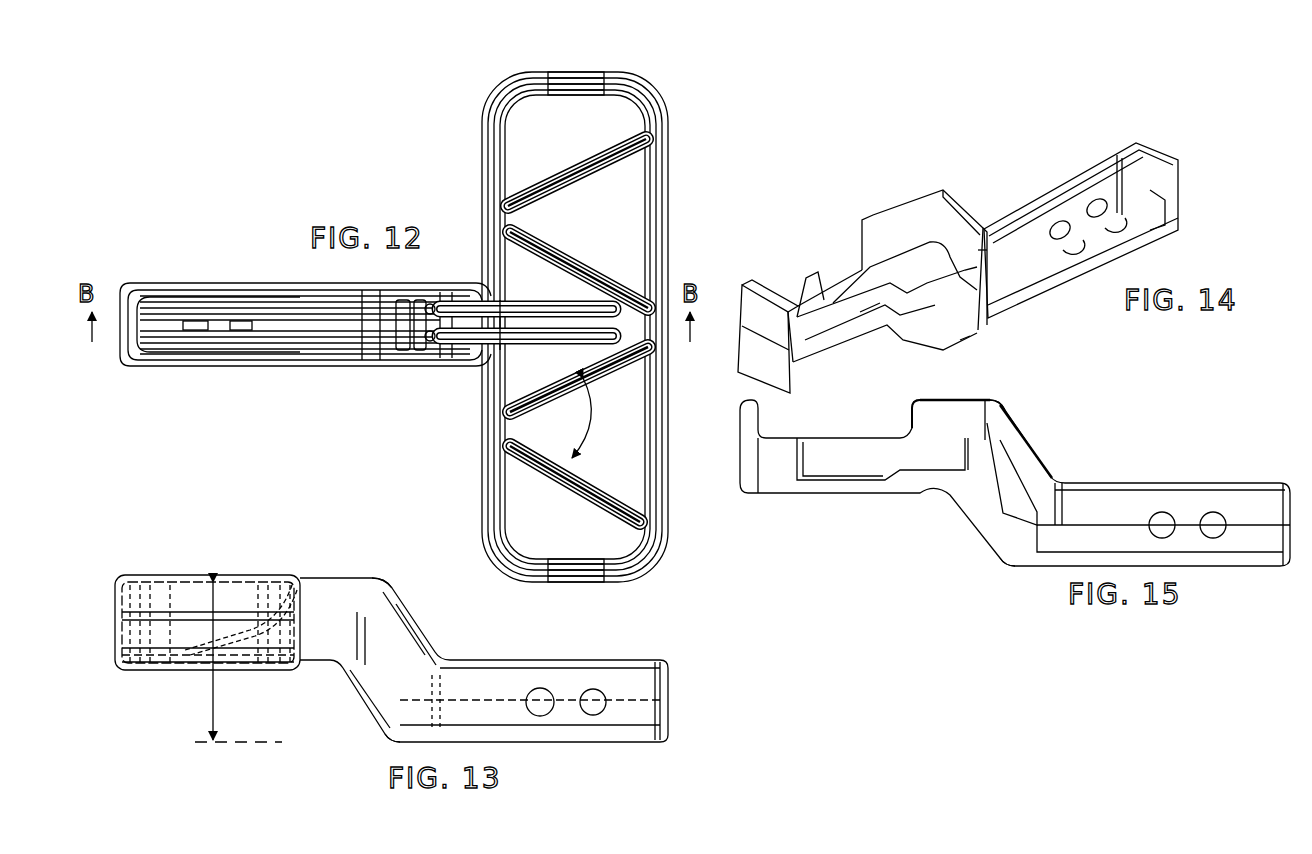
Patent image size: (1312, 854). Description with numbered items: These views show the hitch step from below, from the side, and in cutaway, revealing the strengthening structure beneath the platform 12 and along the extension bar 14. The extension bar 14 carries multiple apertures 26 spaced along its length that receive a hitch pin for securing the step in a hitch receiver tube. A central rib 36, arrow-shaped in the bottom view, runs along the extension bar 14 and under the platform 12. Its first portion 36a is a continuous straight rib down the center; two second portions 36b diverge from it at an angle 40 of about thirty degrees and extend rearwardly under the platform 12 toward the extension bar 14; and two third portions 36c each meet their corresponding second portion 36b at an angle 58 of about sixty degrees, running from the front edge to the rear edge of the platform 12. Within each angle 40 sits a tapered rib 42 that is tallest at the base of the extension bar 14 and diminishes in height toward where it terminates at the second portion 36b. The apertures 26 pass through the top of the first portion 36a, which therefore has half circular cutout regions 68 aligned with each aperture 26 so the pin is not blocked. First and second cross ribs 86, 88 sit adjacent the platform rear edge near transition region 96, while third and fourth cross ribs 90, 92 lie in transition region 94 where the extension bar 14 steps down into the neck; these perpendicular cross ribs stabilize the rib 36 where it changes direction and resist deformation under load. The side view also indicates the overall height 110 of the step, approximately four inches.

In FIG. 12, the platform 12 is at (622, 98).
In FIG. 14, the platform 12 is at (750, 344).
In FIG. 15, the platform 12 is at (760, 483).
In FIG. 12, the extension bar 14 is at (280, 352).
In FIG. 13, the apertures 26 is at (590, 697).
In FIG. 14, the apertures 26 is at (1062, 226).
In FIG. 15, the apertures 26 is at (1165, 512).
In FIG. 12, the rib 36 is at (282, 320).
In FIG. 14, the rib 36 is at (860, 312).
In FIG. 15, the rib 36 is at (1083, 537).
In FIG. 12, the first portion of rib 36a is at (563, 260).
In FIG. 12, the second portions of rib 36b is at (603, 260).
In FIG. 12, the third portions of rib 36c is at (624, 134).
In FIG. 12, the angle 40 is at (522, 246).
In FIG. 12, the rib 42 is at (530, 368).
In FIG. 13, the rib 42 is at (250, 595).
In FIG. 14, the rib 42 is at (843, 284).
In FIG. 15, the rib 42 is at (906, 428).
In FIG. 12, the angle 58 is at (594, 416).
In FIG. 12, the half circular cutout regions 68 is at (196, 312).
In FIG. 14, the half circular cutout regions 68 is at (1117, 158).
In FIG. 12, the first cross rib 86 is at (426, 316).
In FIG. 13, the first cross rib 86 is at (365, 617).
In FIG. 12, the second cross rib 88 is at (404, 330).
In FIG. 14, the second cross rib 88 is at (987, 340).
In FIG. 15, the second cross rib 88 is at (992, 394).
In FIG. 12, the third cross rib 90 is at (436, 300).
In FIG. 13, the third cross rib 90 is at (357, 612).
In FIG. 12, the fourth cross rib 92 is at (420, 336).
In FIG. 14, the fourth cross rib 92 is at (975, 338).
In FIG. 15, the fourth cross rib 92 is at (984, 392).
In FIG. 13, the transition region 94 is at (382, 732).
In FIG. 15, the transition region 94 is at (1023, 553).
In FIG. 13, the transition region 96 is at (388, 583).
In FIG. 15, the transition region 96 is at (1012, 420).
In FIG. 13, the overall height 110 is at (216, 715).